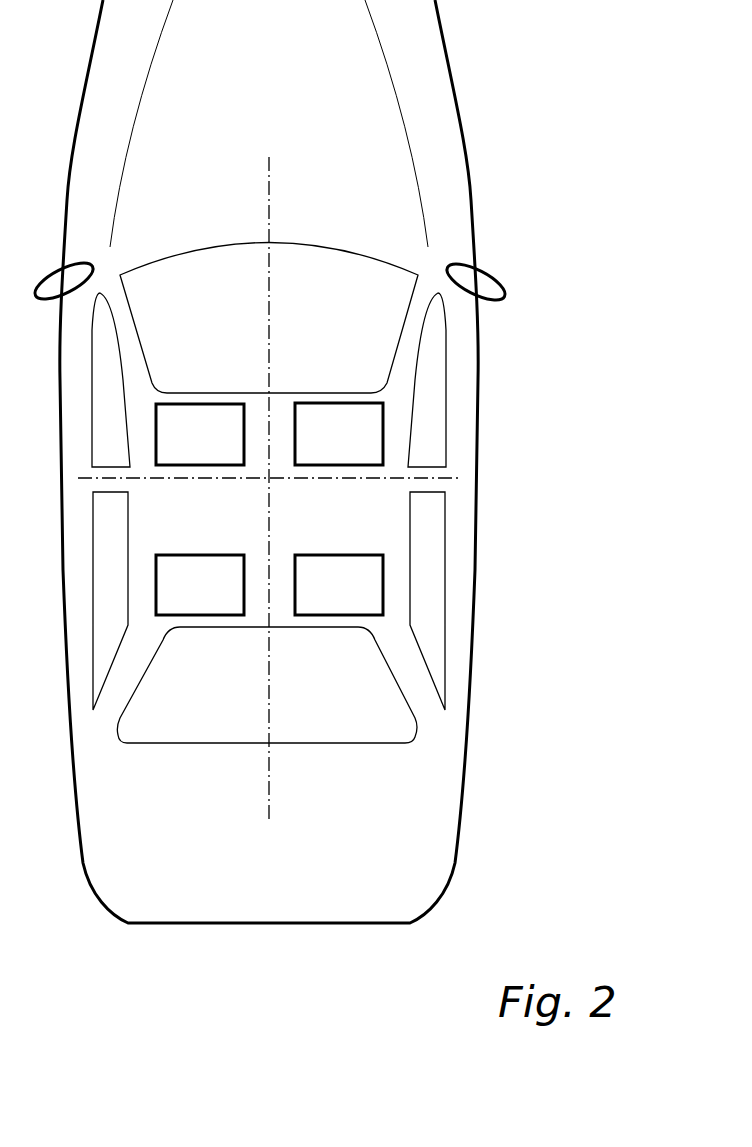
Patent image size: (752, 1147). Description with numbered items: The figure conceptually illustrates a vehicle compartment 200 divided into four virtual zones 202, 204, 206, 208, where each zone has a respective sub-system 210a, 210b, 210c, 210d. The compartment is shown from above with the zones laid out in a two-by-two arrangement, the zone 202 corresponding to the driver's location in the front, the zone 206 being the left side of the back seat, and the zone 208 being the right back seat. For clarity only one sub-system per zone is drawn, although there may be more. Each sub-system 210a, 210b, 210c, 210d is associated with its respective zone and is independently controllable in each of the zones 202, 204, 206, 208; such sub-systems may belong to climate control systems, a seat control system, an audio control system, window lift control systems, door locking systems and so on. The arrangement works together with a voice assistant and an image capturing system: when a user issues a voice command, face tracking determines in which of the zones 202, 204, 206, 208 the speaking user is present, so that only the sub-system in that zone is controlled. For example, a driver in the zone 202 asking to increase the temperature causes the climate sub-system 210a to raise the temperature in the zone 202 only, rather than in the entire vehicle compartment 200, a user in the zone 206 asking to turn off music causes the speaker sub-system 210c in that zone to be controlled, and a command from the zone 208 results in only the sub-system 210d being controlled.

The vehicle compartment 200 is at (387, 295).
The zone 202 is at (226, 375).
The zone 204 is at (363, 377).
The zone 206 is at (221, 545).
The zone 208 is at (363, 545).
The sub-system 210a is at (231, 450).
The sub-system 210b is at (370, 451).
The sub-system 210c is at (231, 602).
The sub-system 210d is at (370, 602).